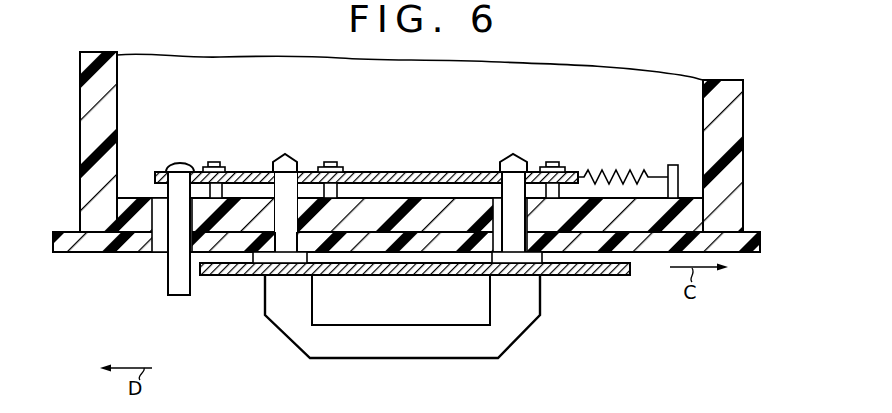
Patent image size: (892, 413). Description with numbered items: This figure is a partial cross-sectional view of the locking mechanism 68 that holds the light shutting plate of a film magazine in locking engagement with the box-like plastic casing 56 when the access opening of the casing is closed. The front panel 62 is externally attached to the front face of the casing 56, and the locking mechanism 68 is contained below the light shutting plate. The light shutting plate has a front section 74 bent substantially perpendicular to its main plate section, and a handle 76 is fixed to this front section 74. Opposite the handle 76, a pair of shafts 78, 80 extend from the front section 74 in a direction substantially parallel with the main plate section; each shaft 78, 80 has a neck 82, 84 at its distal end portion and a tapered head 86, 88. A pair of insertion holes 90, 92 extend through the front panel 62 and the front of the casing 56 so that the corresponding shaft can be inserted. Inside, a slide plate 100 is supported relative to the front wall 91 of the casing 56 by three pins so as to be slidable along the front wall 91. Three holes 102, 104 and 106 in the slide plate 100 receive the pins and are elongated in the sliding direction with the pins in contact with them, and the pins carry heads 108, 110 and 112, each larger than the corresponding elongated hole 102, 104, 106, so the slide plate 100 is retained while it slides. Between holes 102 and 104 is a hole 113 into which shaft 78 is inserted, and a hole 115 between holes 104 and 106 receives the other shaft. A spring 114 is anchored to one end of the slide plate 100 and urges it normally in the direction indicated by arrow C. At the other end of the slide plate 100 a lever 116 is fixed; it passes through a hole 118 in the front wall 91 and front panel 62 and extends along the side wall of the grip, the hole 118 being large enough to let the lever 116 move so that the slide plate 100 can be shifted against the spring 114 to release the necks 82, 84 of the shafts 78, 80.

The casing 56 is at (724, 130).
The front panel 62 is at (650, 246).
The locking mechanism 68 is at (157, 98).
The front section 74 is at (605, 276).
The handle 76 is at (478, 359).
The shaft 78 is at (300, 256).
The shaft 80 is at (511, 236).
The neck 82 is at (278, 172).
The neck 84 is at (504, 172).
The tapered head 86 is at (289, 154).
The tapered head 88 is at (513, 154).
The insertion hole 90 is at (262, 263).
The front wall 91 is at (700, 210).
The insertion hole 92 is at (485, 263).
The slide plate 100 is at (422, 171).
The elongated hole 102 is at (228, 170).
The elongated hole 104 is at (360, 171).
The elongated hole 106 is at (572, 172).
The head 108 is at (208, 165).
The head 110 is at (340, 166).
The head 112 is at (554, 162).
The hole 113 is at (326, 167).
The spring 114 is at (626, 171).
The hole 115 is at (532, 171).
The lever 116 is at (180, 297).
The hole 118 is at (158, 254).